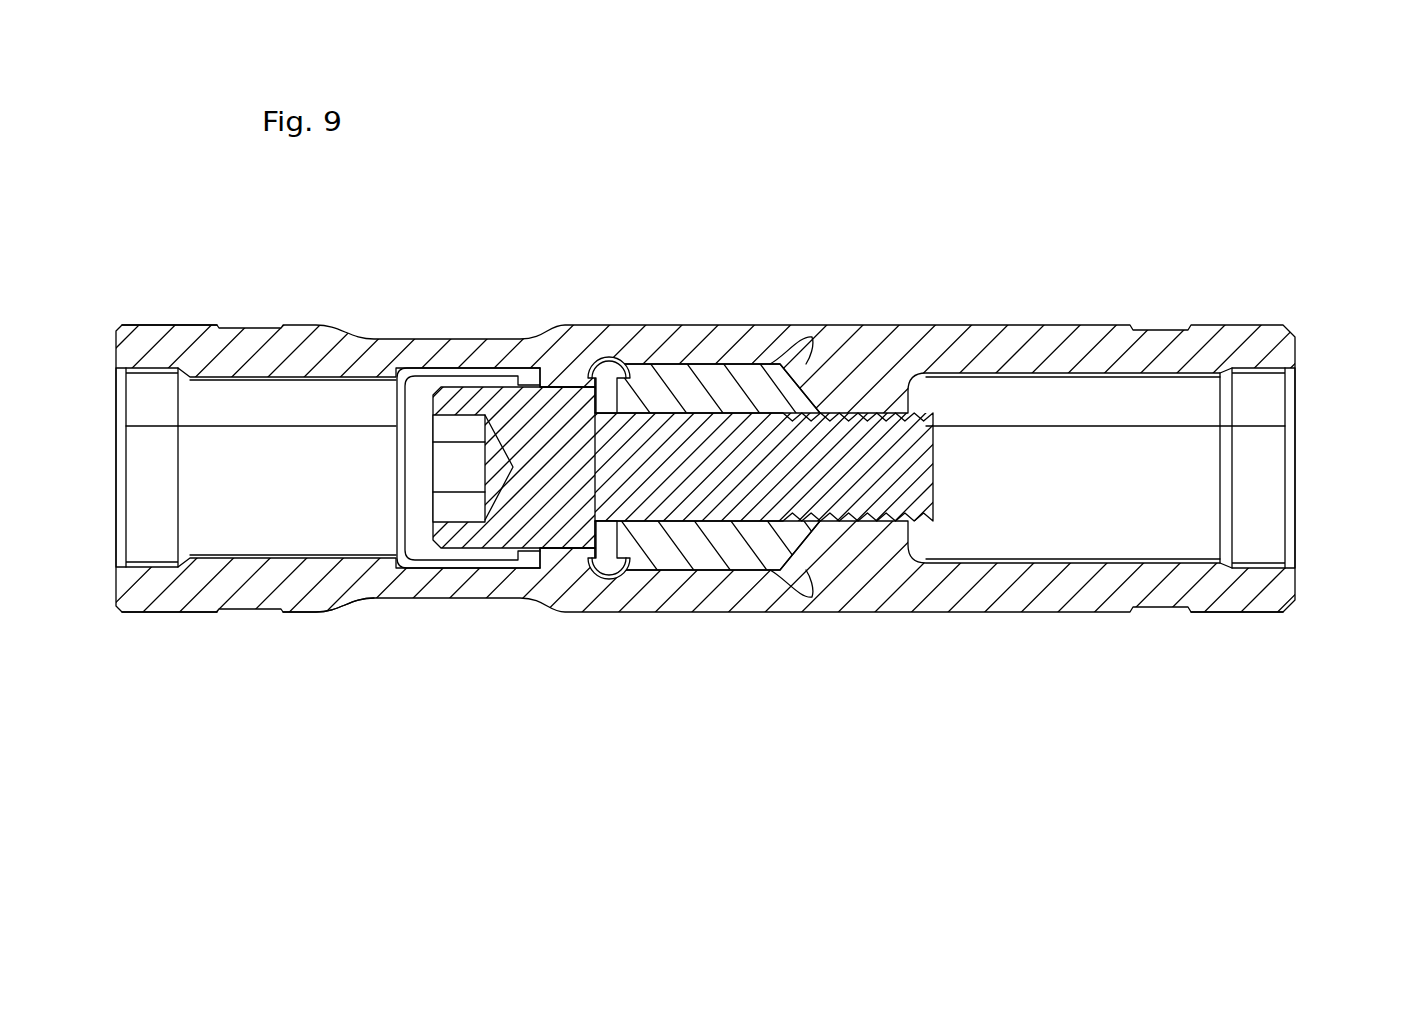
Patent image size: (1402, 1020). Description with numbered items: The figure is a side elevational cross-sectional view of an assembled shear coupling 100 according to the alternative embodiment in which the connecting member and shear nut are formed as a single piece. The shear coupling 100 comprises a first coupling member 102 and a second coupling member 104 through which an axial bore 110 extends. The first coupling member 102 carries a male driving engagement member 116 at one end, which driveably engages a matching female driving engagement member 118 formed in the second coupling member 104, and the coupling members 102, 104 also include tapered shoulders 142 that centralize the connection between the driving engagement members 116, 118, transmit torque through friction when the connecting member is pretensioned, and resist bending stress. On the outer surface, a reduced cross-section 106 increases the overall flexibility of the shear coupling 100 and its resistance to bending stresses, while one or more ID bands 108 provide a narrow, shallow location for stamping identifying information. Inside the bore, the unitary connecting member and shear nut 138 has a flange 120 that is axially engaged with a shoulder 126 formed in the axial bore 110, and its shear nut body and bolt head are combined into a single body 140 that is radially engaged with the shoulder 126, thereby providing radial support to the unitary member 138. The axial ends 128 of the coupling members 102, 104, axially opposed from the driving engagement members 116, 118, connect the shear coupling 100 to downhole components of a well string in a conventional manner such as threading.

The shear coupling 100 is at (147, 278).
The first coupling member 102 is at (1022, 325).
The second coupling member 104 is at (160, 612).
The reduced cross-section 106 is at (383, 612).
The ID band 108 is at (254, 324).
The axial bore 110 is at (278, 522).
The male driving engagement member 116 is at (683, 547).
The female driving engagement member 118 is at (712, 364).
The flange 120 is at (528, 376).
The shoulder 126 is at (572, 368).
The axial ends 128 is at (145, 487).
The unitary connecting member and shear nut 138 is at (655, 427).
The single body 140 is at (470, 385).
The tapered shoulders 142 is at (812, 337).